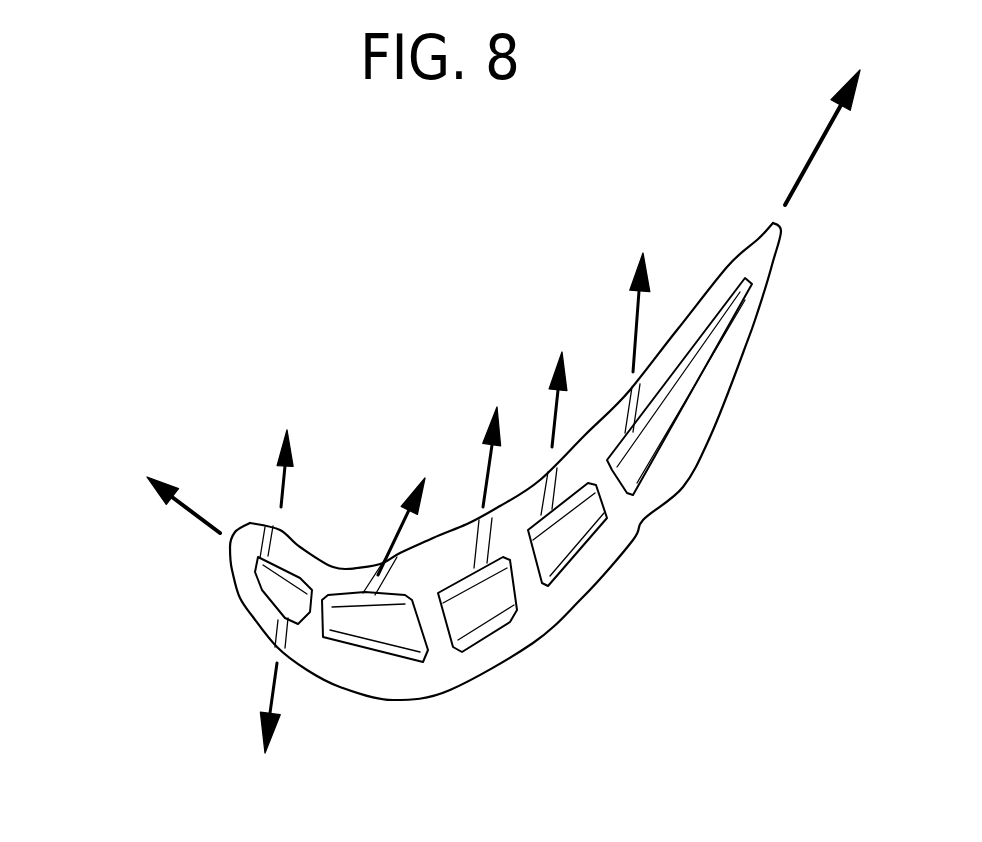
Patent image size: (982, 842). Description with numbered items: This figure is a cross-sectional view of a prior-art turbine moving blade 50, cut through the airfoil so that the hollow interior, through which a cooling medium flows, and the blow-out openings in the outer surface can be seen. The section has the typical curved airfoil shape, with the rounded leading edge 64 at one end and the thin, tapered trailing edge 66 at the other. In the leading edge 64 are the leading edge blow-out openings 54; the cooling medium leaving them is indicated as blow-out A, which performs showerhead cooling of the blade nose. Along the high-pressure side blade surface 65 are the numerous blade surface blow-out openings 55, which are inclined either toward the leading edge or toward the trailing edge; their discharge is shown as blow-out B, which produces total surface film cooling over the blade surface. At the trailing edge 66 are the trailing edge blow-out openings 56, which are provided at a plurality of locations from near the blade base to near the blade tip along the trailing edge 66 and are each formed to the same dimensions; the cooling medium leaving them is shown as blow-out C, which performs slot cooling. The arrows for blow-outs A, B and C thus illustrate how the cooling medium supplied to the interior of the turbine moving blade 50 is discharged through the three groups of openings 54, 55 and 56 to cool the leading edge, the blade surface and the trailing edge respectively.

The turbine moving blade 50 is at (737, 367).
The leading edge blow-out openings 54 is at (243, 558).
The blade surface blow-out openings 55 is at (373, 597).
The trailing edge blow-out openings 56 is at (745, 283).
The leading edge 64 is at (222, 515).
The high-pressure side blade surface 65 is at (522, 435).
The trailing edge 66 is at (773, 197).
The blow-out from the leading edge blow-out openings A is at (153, 493).
The blow-out from the blade surface blow-out openings B is at (483, 440).
The blow-out from the trailing edge blow-out openings C is at (827, 137).